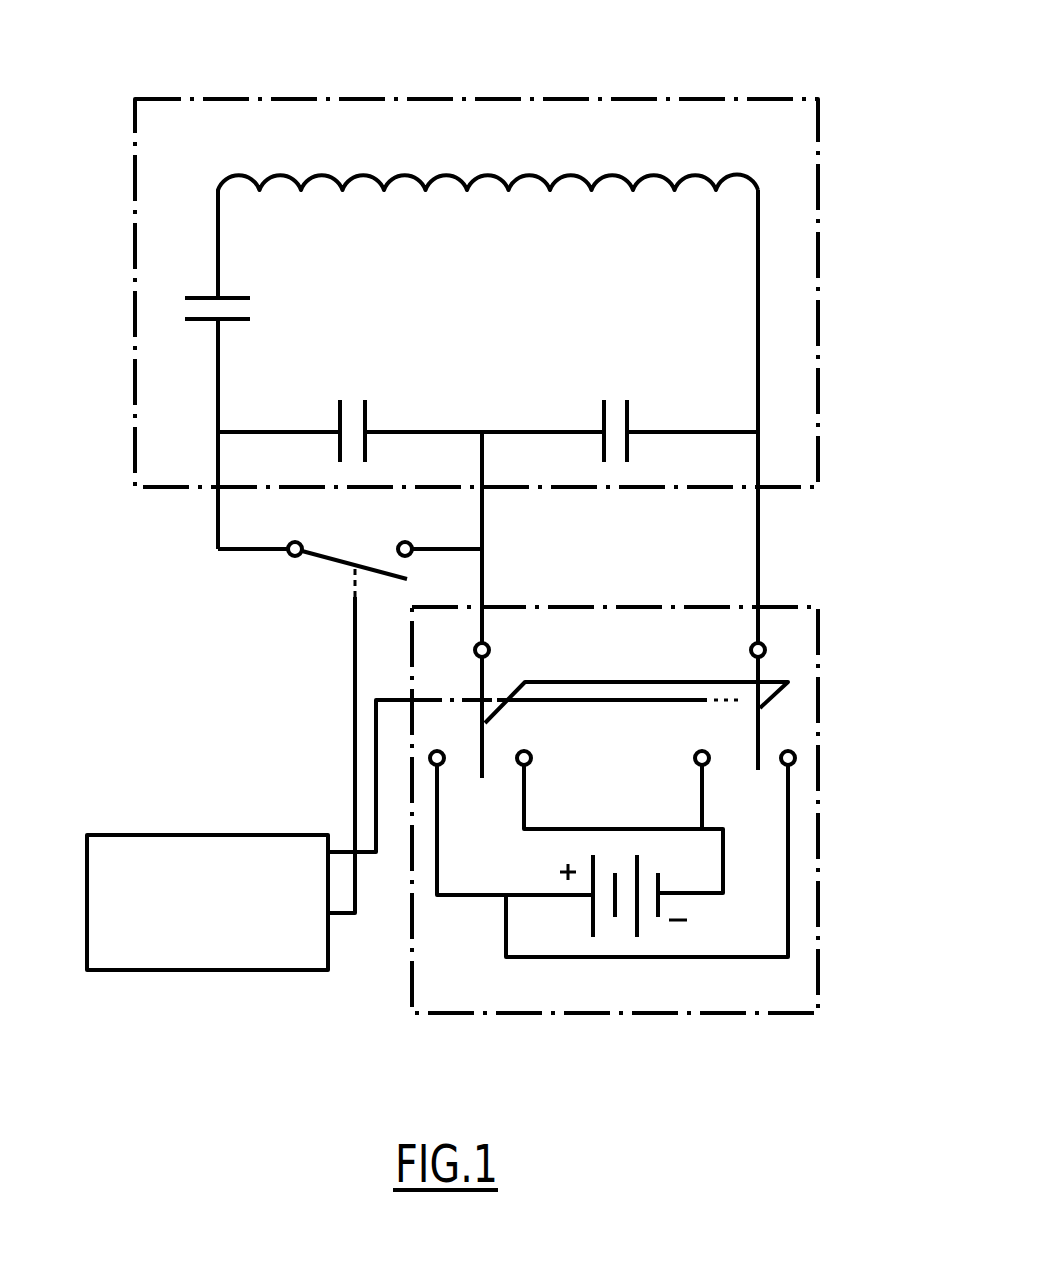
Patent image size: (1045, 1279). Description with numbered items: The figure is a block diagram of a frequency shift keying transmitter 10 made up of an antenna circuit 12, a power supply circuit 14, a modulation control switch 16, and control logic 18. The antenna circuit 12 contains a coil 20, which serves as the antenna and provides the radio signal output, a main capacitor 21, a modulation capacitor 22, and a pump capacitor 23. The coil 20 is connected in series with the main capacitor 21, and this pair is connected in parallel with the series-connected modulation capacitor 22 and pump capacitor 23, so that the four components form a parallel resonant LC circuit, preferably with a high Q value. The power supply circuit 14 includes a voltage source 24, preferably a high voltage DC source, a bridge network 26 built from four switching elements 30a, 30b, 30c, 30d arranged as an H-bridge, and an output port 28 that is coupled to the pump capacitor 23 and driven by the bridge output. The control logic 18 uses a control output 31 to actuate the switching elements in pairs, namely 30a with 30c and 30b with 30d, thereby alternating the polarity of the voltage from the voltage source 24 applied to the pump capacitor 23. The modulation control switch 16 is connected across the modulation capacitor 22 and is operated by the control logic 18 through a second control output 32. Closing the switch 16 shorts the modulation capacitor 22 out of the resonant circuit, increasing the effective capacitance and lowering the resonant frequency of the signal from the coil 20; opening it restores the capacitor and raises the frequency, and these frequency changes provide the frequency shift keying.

The frequency shift keying transmitter 10 is at (785, 47).
The antenna circuit 12 is at (820, 279).
The power supply circuit 14 is at (817, 606).
The modulation control switch 16 is at (318, 580).
The control logic 18 is at (242, 835).
The coil 20 is at (532, 174).
The main capacitor 21 is at (227, 298).
The modulation capacitor 22 is at (365, 414).
The pump capacitor 23 is at (627, 413).
The voltage source 24 is at (593, 920).
The bridge network 26 is at (678, 789).
The output port 28 is at (556, 634).
The switching element 30a is at (455, 790).
The switching element 30b is at (512, 732).
The switching element 30c is at (717, 722).
The switching element 30d is at (787, 724).
The control output 31 is at (376, 745).
The control output 32 is at (355, 690).